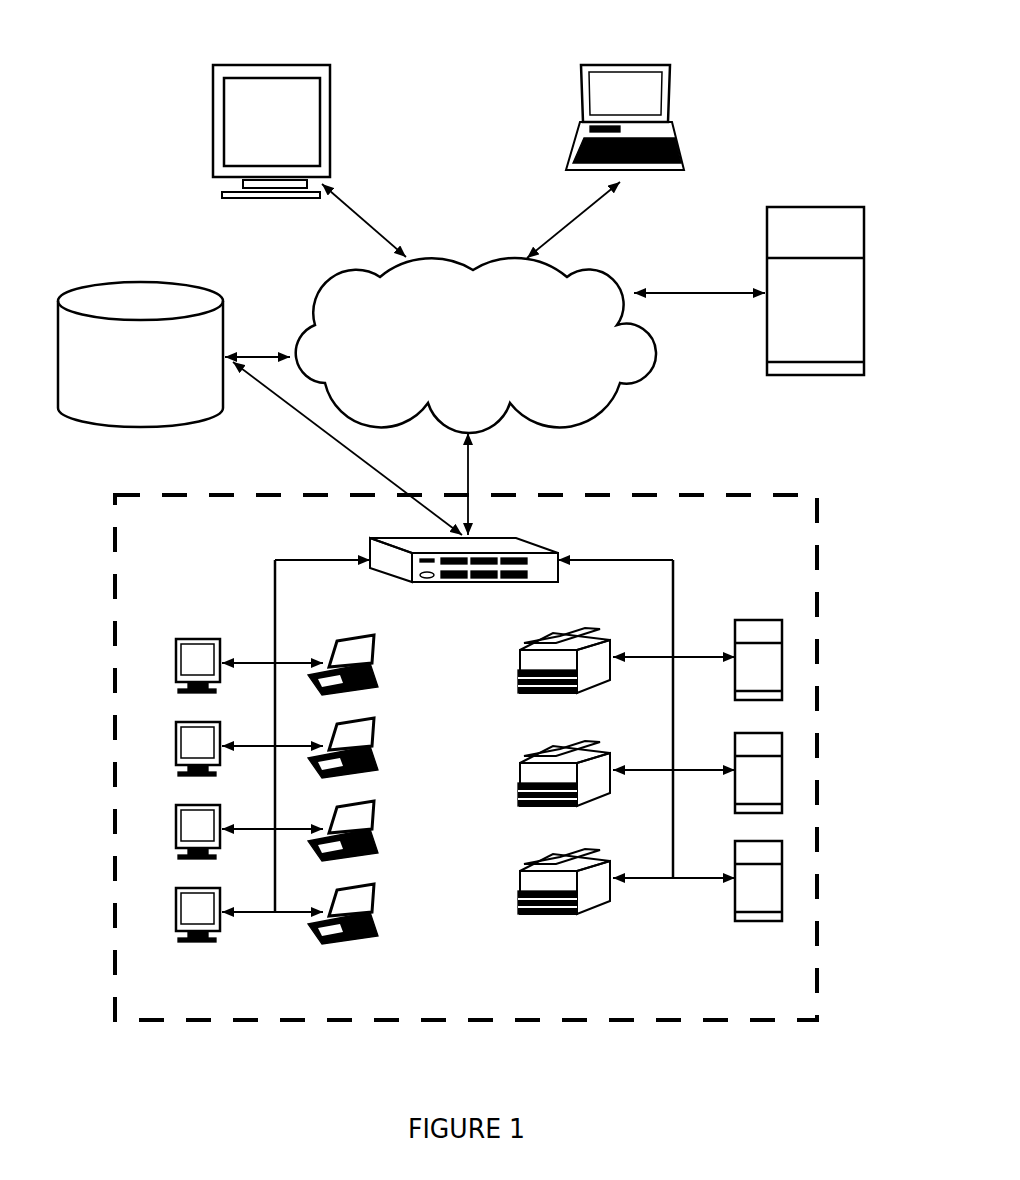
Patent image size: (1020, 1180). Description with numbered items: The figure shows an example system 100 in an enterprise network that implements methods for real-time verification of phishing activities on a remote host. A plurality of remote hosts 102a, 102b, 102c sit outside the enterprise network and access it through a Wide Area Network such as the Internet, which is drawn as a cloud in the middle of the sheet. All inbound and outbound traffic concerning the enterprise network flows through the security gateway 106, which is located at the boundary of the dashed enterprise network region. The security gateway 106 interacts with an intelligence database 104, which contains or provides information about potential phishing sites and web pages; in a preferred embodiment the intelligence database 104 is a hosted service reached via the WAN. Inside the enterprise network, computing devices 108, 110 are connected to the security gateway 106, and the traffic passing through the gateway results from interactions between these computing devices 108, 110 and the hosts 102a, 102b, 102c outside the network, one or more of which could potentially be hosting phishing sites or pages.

The system 100 is at (729, 92).
The remote host 102a is at (271, 151).
The remote host 102b is at (625, 139).
The remote host 102c is at (815, 309).
The intelligence database 104 is at (158, 395).
The security gateway 106 is at (464, 574).
The computing devices 108 is at (277, 808).
The computing devices 110 is at (650, 801).